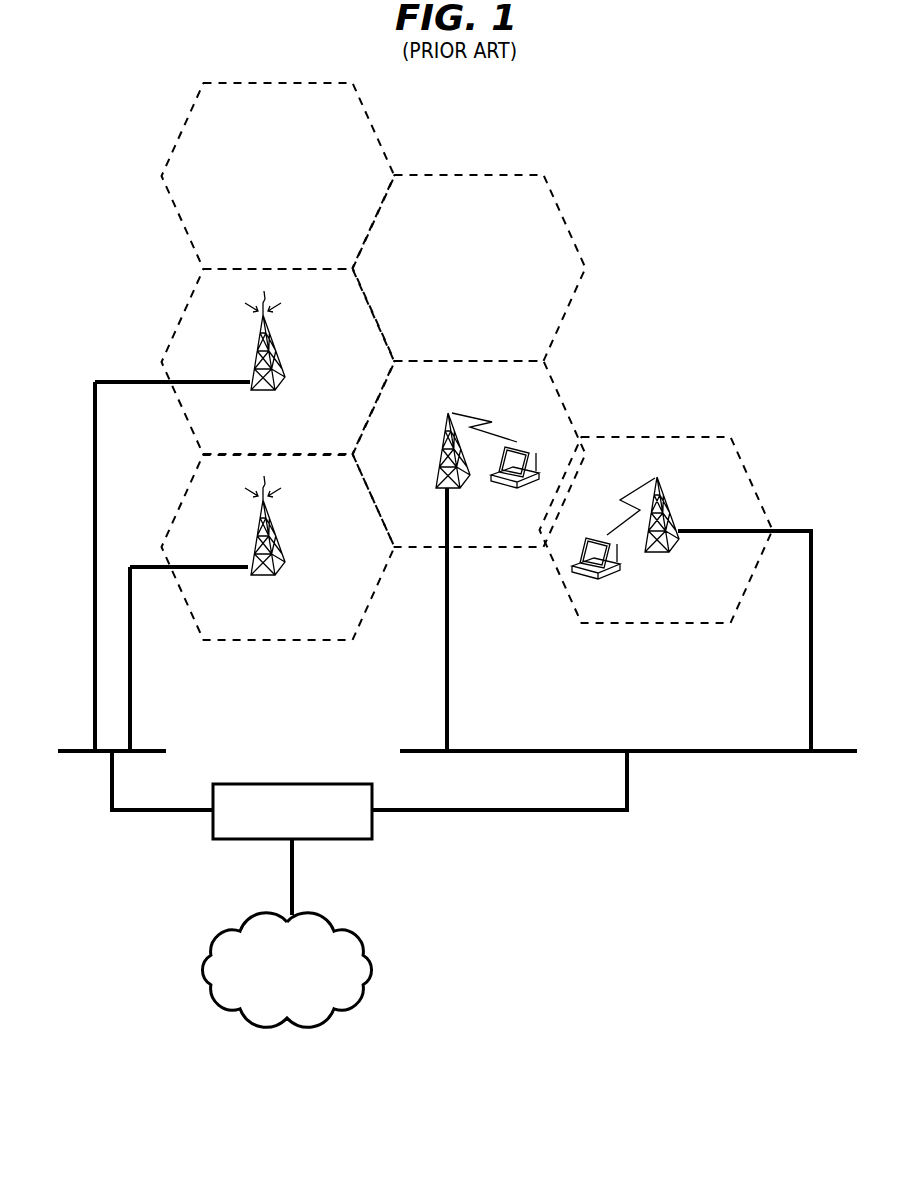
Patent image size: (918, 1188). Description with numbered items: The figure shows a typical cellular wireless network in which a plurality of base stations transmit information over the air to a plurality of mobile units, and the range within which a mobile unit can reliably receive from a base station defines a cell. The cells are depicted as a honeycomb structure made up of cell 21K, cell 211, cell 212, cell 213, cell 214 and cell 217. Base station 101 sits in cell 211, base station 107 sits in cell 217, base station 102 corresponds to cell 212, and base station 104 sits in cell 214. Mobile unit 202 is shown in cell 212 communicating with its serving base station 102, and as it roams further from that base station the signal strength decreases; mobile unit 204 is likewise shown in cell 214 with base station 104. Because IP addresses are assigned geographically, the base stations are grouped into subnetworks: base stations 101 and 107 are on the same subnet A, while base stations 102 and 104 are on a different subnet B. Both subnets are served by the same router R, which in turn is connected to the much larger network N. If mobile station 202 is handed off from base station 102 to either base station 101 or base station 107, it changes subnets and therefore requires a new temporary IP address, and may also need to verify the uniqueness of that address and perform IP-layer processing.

The cell 21K is at (278, 176).
The cell 211 is at (278, 362).
The cell 212 is at (469, 454).
The cell 213 is at (469, 268).
The cell 214 is at (656, 530).
The cell 217 is at (278, 547).
The base station 101 is at (252, 375).
The base station 102 is at (436, 470).
The base station 104 is at (672, 505).
The base station 107 is at (252, 563).
The mobile unit 202 is at (514, 440).
The mobile unit 204 is at (614, 562).
The subnet A is at (149, 748).
The subnet B is at (417, 748).
The router R is at (287, 782).
The network N is at (374, 962).